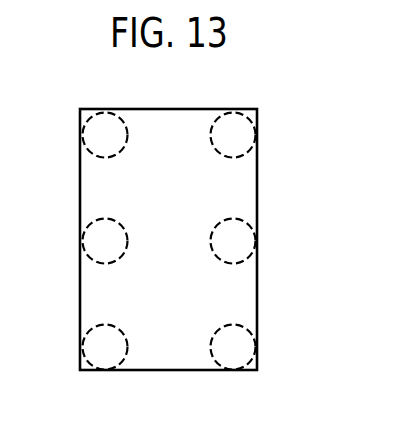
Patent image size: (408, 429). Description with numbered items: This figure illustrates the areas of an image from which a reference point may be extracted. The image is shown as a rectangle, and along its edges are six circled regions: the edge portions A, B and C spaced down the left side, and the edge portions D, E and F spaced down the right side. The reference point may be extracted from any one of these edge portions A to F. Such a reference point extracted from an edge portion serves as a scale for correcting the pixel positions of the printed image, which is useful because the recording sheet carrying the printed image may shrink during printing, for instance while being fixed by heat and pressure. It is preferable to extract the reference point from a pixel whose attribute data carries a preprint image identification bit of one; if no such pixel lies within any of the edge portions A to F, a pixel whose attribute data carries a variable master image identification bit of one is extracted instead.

The edge portion A is at (90, 118).
The edge portion B is at (90, 224).
The edge portion C is at (90, 330).
The edge portion D is at (249, 117).
The edge portion E is at (249, 223).
The edge portion F is at (249, 329).